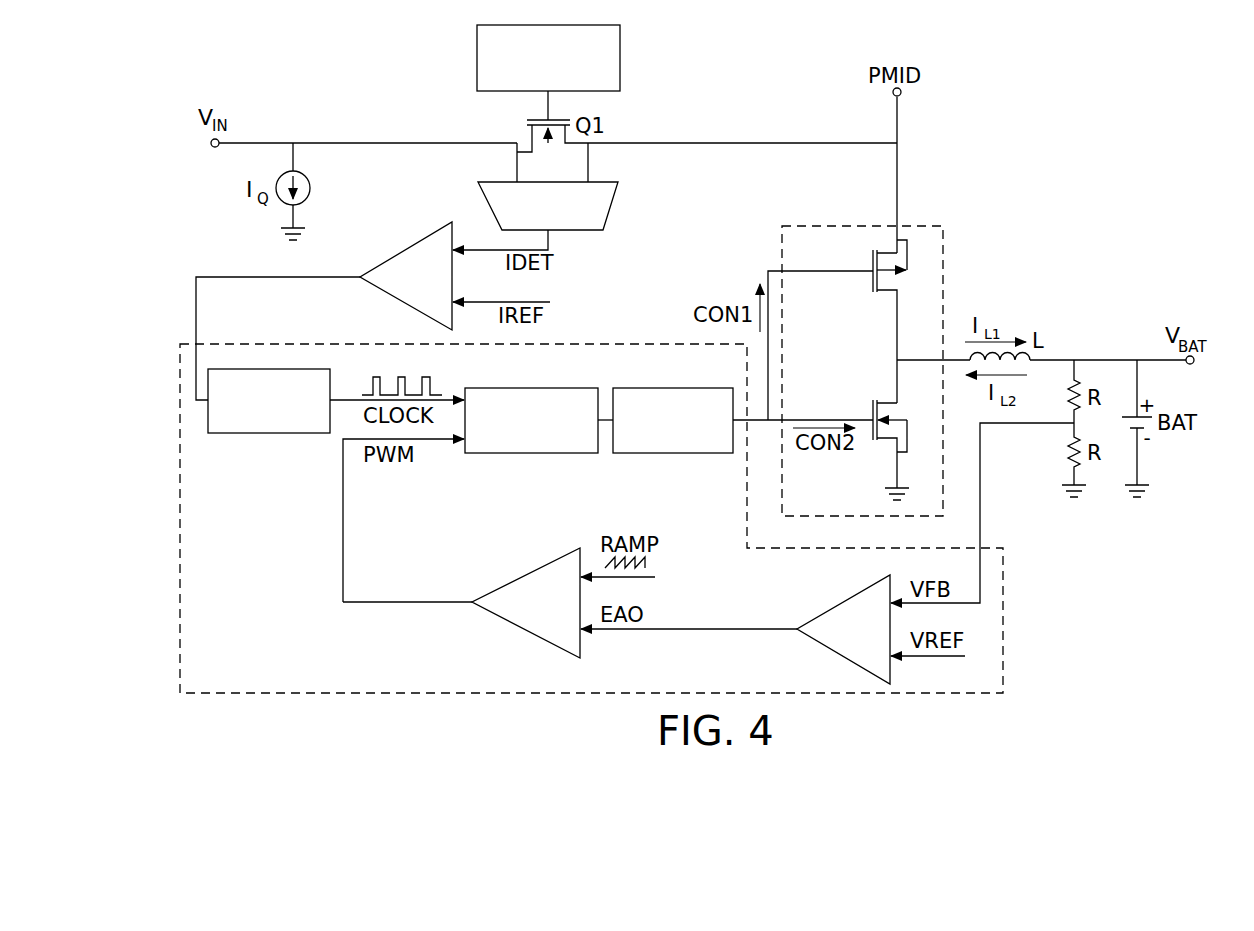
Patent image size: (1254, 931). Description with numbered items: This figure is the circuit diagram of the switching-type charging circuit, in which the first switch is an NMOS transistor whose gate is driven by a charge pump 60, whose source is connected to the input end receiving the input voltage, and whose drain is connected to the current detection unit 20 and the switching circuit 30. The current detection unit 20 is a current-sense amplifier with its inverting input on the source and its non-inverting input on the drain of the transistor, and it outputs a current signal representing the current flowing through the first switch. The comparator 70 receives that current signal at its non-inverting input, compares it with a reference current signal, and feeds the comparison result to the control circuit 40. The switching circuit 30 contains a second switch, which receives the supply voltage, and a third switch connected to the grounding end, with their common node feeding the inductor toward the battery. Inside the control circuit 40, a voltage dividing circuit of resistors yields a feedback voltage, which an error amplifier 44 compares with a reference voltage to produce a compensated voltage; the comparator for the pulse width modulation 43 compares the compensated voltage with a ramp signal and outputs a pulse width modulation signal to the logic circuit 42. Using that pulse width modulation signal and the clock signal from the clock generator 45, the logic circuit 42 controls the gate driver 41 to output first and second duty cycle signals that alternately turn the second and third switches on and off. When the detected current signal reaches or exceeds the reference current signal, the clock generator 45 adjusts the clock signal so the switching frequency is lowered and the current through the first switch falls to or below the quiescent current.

The charge pump 60 is at (620, 60).
The current detection unit 20 is at (608, 208).
The comparator 70 is at (404, 250).
The switching circuit 30 is at (943, 272).
The control circuit 40 is at (1003, 620).
The gate driver 41 is at (675, 453).
The logic circuit 42 is at (527, 453).
The comparator for the pulse width modulation 43 is at (530, 572).
The error amplifier (ERR) 44 is at (845, 600).
The clock generator 45 is at (267, 433).